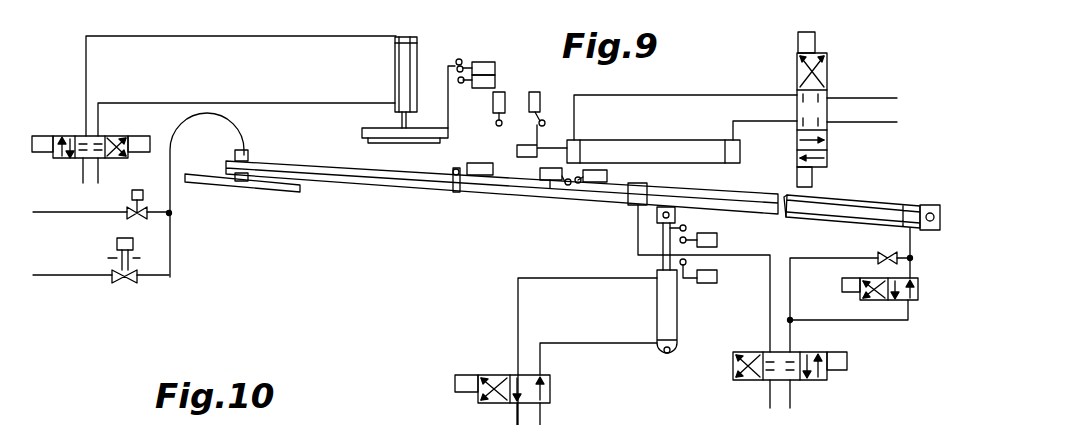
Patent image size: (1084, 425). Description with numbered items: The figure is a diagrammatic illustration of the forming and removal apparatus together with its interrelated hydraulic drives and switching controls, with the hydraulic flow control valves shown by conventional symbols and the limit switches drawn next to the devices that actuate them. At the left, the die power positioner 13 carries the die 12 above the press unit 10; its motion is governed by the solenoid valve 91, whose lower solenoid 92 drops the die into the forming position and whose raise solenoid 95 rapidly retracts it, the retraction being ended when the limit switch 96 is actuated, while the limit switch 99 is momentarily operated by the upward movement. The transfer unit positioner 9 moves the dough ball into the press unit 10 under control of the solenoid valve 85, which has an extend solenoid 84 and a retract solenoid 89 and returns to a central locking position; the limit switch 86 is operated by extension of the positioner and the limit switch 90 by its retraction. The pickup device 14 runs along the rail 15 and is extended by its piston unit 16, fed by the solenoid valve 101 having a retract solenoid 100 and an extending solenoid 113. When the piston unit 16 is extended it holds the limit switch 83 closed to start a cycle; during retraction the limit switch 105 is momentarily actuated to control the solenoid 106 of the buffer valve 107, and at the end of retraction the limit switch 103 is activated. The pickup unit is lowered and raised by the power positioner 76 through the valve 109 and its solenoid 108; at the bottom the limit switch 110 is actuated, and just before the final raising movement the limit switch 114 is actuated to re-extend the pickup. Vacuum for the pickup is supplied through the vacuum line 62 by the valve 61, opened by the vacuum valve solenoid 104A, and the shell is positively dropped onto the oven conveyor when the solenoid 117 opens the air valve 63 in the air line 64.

The transfer unit positioner 9 is at (674, 139).
The press unit 10 is at (448, 156).
The die 12 is at (363, 141).
The die power positioner 13 is at (396, 70).
The pickup device 14 is at (270, 191).
The main rail 15 is at (388, 190).
The piston unit 16 is at (877, 200).
The vacuum valve 61 is at (128, 286).
The vacuum line 62 is at (86, 276).
The air valve 63 is at (127, 214).
The air line 64 is at (82, 212).
The power positioner 76 is at (656, 309).
The limit switch 83 is at (483, 176).
The solenoid 84 is at (812, 175).
The solenoid valve 85 is at (797, 108).
The limit switch 86 is at (493, 101).
The solenoid 89 is at (815, 39).
The limit switch 90 is at (540, 92).
The solenoid valve 91 is at (62, 136).
The solenoid 92 is at (44, 152).
The raise solenoid 95 is at (133, 136).
The limit switch 96 is at (476, 62).
The limit switch 99 is at (495, 82).
The retract solenoid 100 is at (728, 352).
The solenoid valve 101 is at (808, 380).
The limit switch 103 is at (607, 174).
The vacuum valve solenoid 104A is at (113, 246).
The limit switch 105 is at (549, 188).
The solenoid 106 is at (842, 284).
The buffer valve 107 is at (878, 300).
The solenoid 108 is at (462, 376).
The valve 109 is at (492, 375).
The limit switch 110 is at (707, 283).
The solenoid 113 is at (840, 372).
The limit switch 114 is at (717, 240).
The solenoid 117 is at (138, 190).